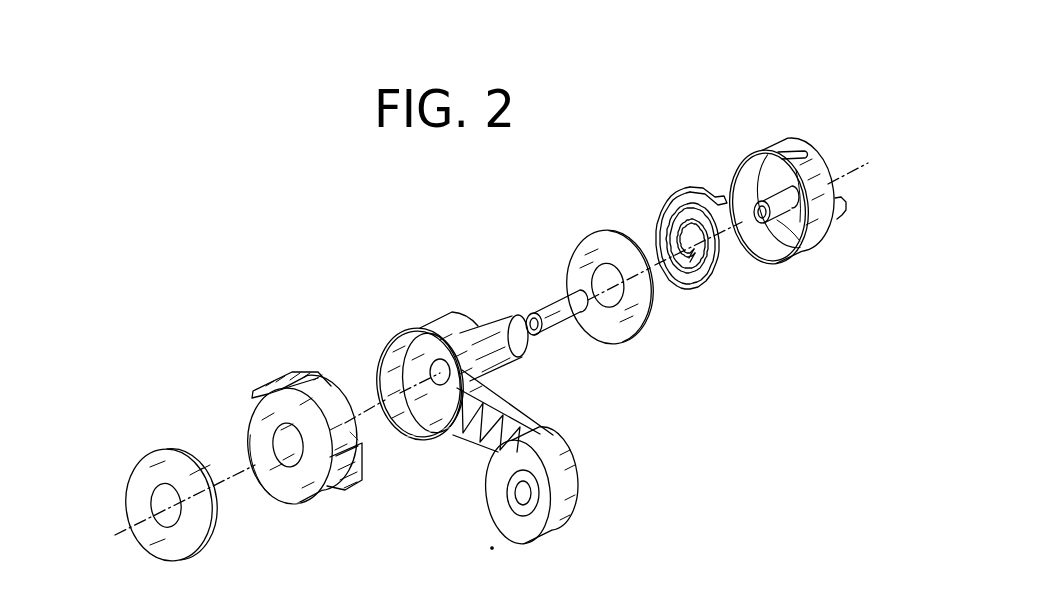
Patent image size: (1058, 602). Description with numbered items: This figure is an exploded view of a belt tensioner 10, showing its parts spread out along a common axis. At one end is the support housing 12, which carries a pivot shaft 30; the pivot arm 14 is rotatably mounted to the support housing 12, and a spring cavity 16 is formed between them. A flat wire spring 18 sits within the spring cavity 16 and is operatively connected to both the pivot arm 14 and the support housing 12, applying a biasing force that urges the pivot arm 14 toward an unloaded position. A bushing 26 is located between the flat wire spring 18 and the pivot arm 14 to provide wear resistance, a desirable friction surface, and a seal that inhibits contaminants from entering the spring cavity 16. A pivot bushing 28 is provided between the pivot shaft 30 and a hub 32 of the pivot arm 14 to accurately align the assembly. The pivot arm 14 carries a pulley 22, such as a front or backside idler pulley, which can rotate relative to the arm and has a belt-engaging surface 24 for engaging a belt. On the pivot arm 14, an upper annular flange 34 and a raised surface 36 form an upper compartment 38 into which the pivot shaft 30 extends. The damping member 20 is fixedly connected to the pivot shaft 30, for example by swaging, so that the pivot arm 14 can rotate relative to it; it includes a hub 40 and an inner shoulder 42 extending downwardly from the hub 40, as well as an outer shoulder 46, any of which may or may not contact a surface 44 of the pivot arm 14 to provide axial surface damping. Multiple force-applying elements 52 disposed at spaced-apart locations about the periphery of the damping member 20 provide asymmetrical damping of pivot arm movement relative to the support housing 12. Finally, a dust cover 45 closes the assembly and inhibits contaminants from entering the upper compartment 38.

The belt tensioner 10 is at (415, 256).
The support housing 12 is at (818, 229).
The pivot arm 14 is at (500, 407).
The spring cavity 16 is at (765, 258).
The flat wire spring 18 is at (690, 190).
The damping member 20 is at (311, 434).
The pulley 22 is at (560, 494).
The belt-engaging surface 24 is at (567, 528).
The bushing 26 is at (650, 327).
The pivot bushing 28 is at (565, 312).
The pivot shaft 30 is at (838, 221).
The hub 32 is at (493, 328).
The upper annular flange 34 is at (378, 358).
The raised surface 36 is at (463, 432).
The upper compartment 38 is at (413, 340).
The hub 40 is at (300, 497).
The inner shoulder 42 is at (285, 460).
The surface 44 is at (409, 436).
The dust cover 45 is at (146, 468).
The outer shoulder 46 is at (360, 432).
The force-applying elements 52 is at (287, 371).